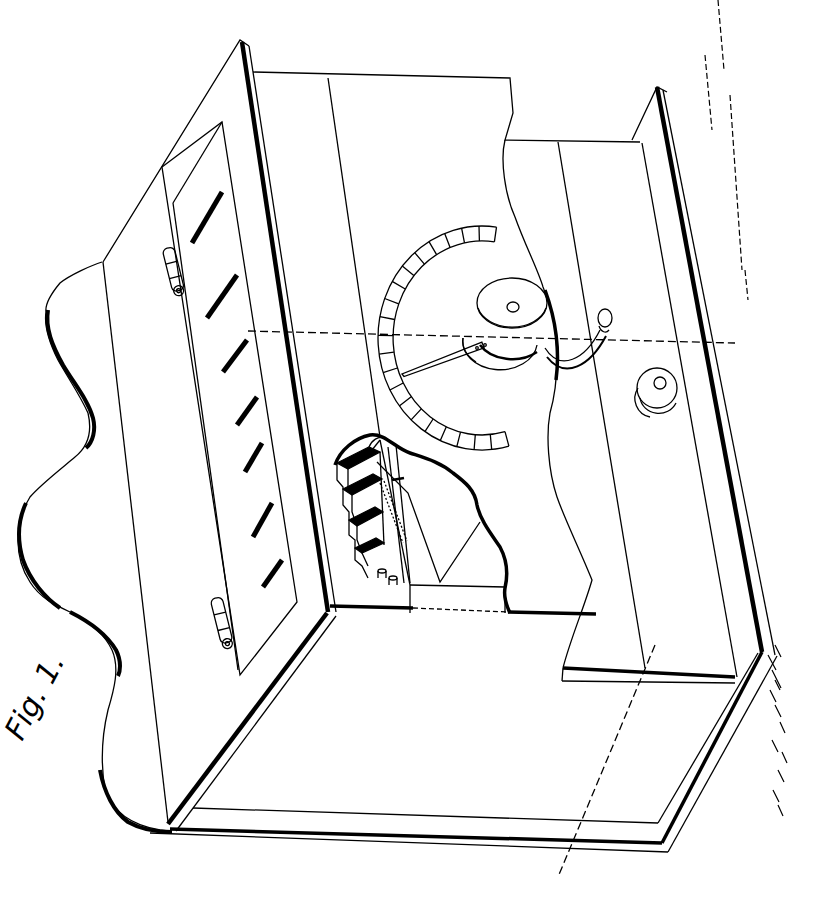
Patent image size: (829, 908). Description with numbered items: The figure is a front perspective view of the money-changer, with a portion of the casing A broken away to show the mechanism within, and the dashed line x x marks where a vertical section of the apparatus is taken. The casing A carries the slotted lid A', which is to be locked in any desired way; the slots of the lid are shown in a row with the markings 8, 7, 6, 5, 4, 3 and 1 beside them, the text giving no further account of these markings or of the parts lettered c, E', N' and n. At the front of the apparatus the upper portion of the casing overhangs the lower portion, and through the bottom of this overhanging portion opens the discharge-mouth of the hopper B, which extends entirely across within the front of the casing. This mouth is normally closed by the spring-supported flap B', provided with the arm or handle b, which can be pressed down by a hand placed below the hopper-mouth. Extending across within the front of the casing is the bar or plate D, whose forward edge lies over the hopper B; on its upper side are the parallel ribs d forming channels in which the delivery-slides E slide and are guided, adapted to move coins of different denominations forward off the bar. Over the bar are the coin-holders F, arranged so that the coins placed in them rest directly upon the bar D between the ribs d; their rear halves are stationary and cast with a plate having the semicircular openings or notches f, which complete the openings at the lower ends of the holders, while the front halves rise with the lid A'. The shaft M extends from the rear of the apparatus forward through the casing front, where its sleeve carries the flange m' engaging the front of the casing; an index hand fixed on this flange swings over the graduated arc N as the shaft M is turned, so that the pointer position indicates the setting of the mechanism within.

The casing A is at (495, 377).
The slotted lid A' is at (219, 435).
The hopper B is at (441, 526).
The spring-supported flap B' is at (575, 341).
The arm or handle b is at (604, 330).
The knob c is at (656, 439).
The bar or plate D is at (397, 514).
The parallel ribs d is at (463, 677).
The delivery-slides E is at (349, 512).
The cam step E' is at (347, 457).
The coin-holders F is at (388, 588).
The semicircular openings or notches f is at (380, 574).
The shaft M is at (517, 329).
The flange m' is at (500, 366).
The graduated arc N is at (432, 338).
The dial support N' is at (363, 430).
The pointer n is at (460, 352).
The section line x x is at (485, 610).
The slot 1 is at (254, 592).
The slot 3 is at (245, 537).
The slot 4 is at (235, 475).
The slot 5 is at (230, 431).
The slot 6 is at (220, 373).
The slot 7 is at (211, 310).
The slot 8 is at (197, 227).